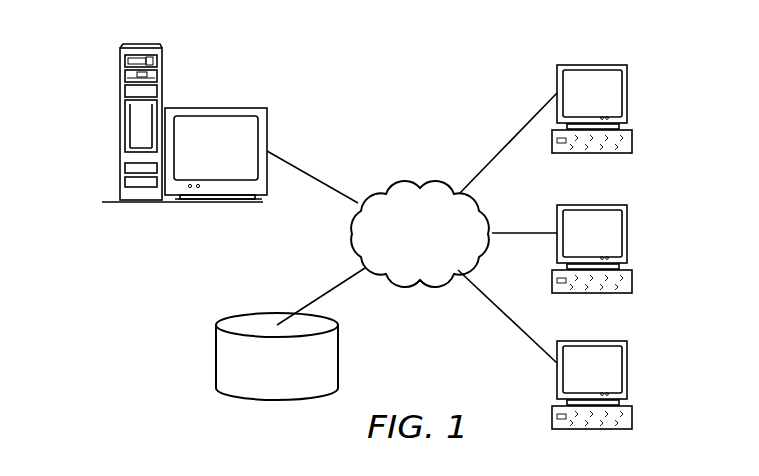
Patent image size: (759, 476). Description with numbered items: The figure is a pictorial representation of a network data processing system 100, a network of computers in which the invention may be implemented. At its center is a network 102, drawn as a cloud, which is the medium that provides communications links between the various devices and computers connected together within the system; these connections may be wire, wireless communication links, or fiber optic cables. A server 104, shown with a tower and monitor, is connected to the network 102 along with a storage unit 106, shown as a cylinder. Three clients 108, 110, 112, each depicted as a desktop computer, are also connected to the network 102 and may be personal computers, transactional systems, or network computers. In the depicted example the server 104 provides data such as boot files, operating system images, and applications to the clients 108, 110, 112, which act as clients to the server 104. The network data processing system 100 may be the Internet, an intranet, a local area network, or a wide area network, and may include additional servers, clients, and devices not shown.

The network data processing system 100 is at (348, 72).
The network 102 is at (392, 187).
The server 104 is at (119, 125).
The storage unit 106 is at (215, 357).
The client 108 is at (628, 95).
The client 110 is at (628, 233).
The client 112 is at (628, 372).